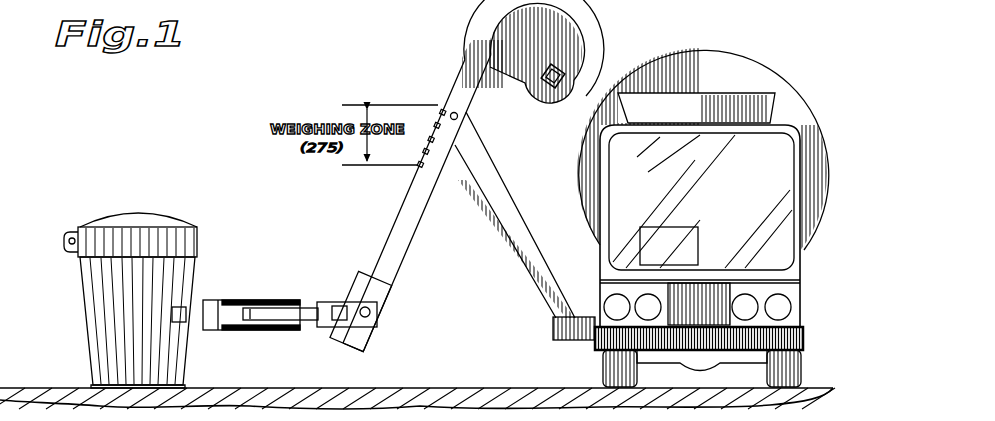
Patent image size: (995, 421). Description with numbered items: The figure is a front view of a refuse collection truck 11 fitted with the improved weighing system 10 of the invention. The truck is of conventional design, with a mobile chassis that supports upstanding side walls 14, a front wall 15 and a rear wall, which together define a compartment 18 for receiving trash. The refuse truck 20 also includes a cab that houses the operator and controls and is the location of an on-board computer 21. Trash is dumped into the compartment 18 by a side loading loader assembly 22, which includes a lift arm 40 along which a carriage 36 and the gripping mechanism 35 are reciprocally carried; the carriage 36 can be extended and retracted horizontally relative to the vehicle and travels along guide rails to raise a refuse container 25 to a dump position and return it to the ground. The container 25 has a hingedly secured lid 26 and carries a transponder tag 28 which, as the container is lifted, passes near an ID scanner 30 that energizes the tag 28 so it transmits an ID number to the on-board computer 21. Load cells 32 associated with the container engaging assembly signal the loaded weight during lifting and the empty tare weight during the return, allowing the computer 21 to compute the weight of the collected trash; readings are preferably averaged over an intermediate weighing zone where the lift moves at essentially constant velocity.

The weighing system 10 is at (298, 90).
The refuse collection truck 11 is at (571, 190).
The side walls 14 is at (584, 210).
The front wall 15 is at (758, 91).
The compartment 18 is at (782, 114).
The refuse truck 20 is at (797, 103).
The on-board computer 21 is at (672, 228).
The loader assembly 22 is at (573, 23).
The refuse container 25 is at (93, 329).
The lid 26 is at (185, 224).
The transponder tag 28 is at (186, 308).
The ID scanner 30 is at (340, 306).
The load cells 32 is at (248, 321).
The gripping mechanism 35 is at (300, 300).
The carriage 36 is at (344, 331).
The lift arm 40 is at (400, 248).